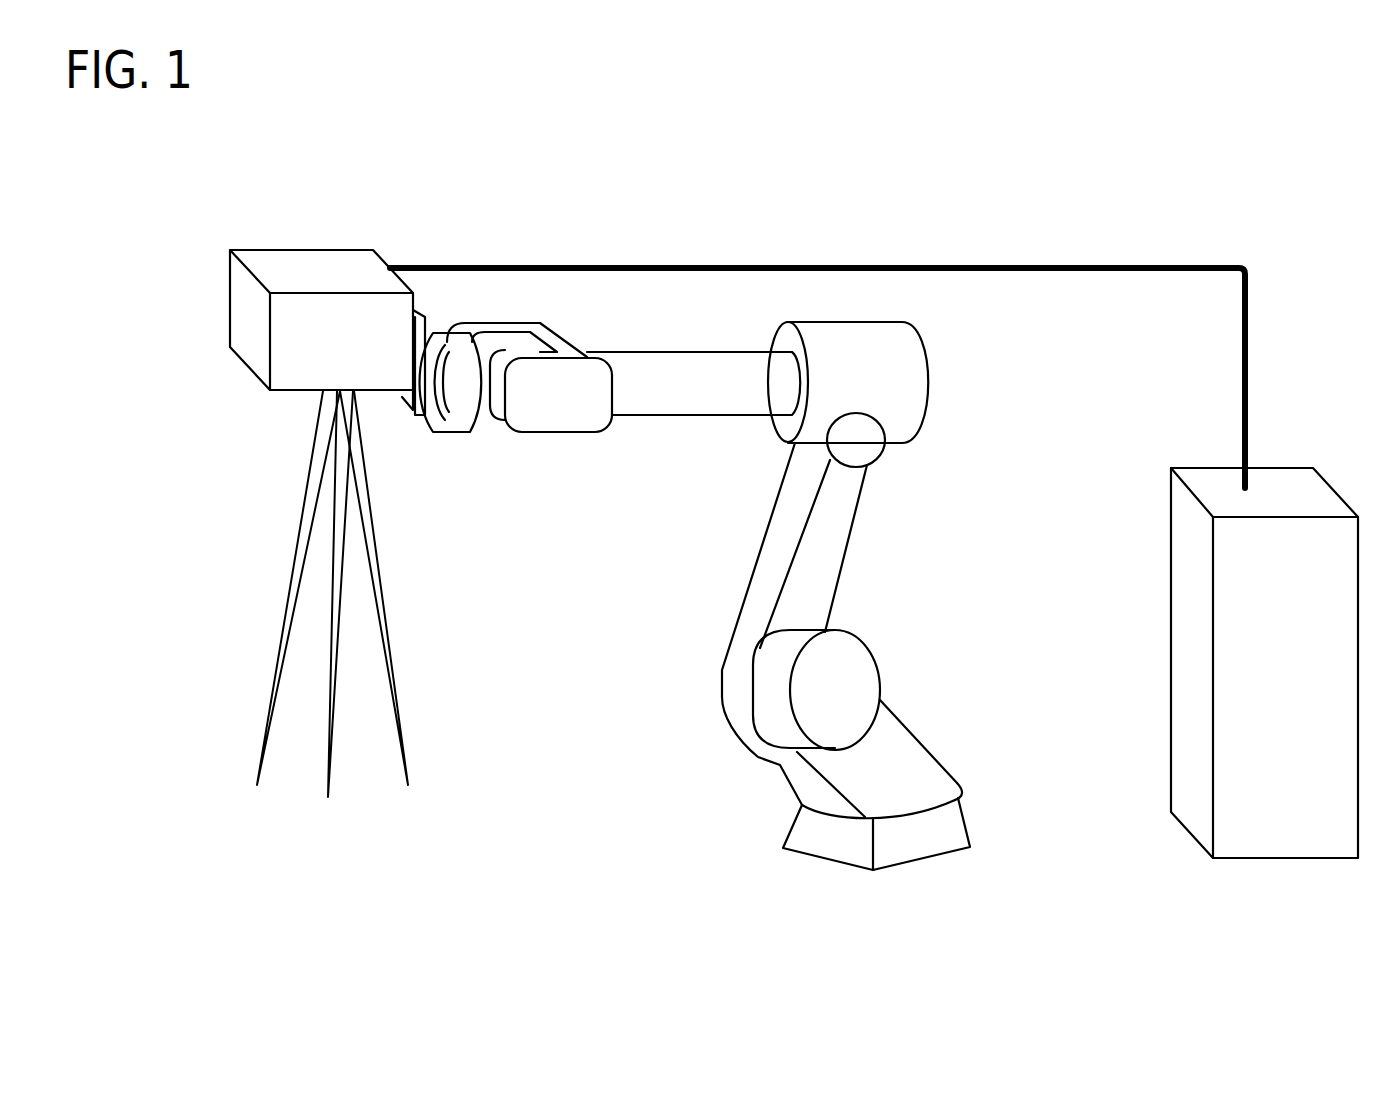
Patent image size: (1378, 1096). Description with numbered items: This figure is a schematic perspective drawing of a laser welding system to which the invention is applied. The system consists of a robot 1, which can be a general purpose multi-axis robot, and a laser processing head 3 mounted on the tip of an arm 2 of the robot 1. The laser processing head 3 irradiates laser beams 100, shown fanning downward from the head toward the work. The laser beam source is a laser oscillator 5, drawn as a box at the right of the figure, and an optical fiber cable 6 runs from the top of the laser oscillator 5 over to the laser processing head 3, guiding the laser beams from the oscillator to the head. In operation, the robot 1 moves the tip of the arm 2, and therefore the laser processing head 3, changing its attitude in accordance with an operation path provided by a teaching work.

The robot 1 is at (736, 596).
The arm 2 is at (678, 415).
The laser processing head 3 is at (312, 255).
The laser oscillator 5 is at (1288, 480).
The optical fiber cable 6 is at (833, 265).
The laser beams 100 is at (388, 627).